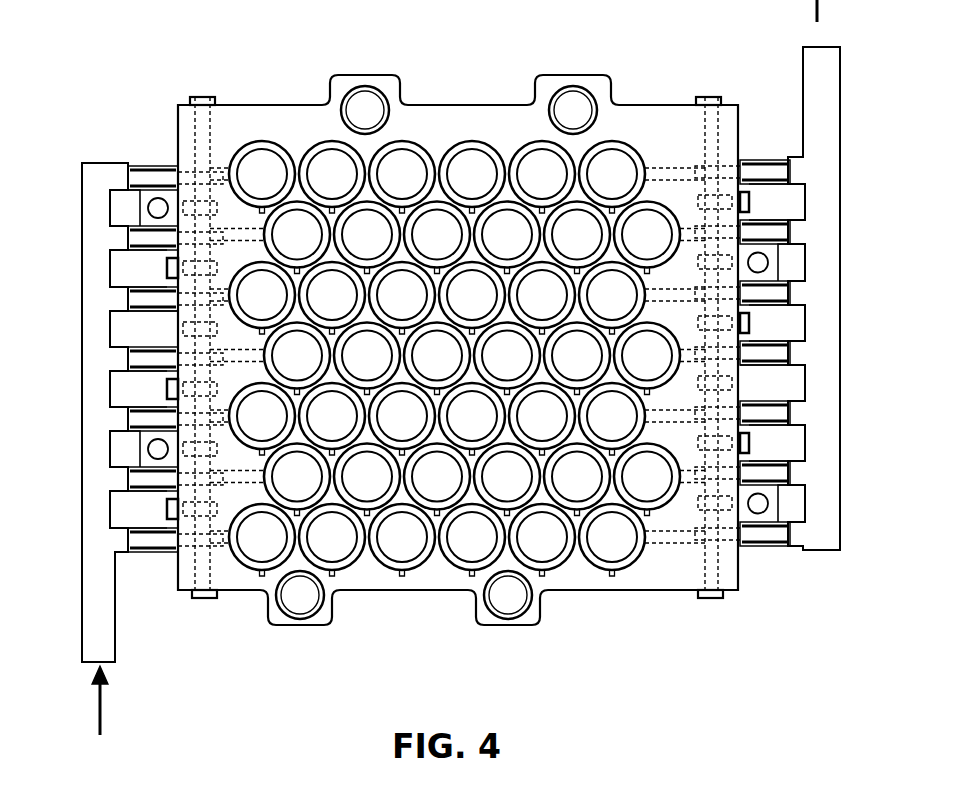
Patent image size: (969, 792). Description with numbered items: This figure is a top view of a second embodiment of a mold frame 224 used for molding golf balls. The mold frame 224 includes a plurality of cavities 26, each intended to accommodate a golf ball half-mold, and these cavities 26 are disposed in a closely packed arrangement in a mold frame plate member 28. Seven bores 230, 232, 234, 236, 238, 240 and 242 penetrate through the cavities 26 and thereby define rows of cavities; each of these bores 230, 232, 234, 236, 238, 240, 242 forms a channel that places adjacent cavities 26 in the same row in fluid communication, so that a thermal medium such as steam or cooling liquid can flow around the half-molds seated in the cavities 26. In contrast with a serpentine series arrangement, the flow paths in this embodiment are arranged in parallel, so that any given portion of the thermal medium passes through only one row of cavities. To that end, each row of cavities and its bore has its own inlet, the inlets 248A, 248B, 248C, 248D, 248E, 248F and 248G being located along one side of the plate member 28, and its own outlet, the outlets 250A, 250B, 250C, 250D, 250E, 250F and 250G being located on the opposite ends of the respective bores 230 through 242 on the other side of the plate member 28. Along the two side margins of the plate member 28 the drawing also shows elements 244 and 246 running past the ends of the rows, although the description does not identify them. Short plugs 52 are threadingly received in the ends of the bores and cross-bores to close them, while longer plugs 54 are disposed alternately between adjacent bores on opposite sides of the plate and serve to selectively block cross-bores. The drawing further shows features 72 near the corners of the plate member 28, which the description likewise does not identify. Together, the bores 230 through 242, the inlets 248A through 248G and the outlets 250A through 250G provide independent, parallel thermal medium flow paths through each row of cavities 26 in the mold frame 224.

The cavities 26 is at (332, 172).
The mold frame plate member 28 is at (456, 108).
The short plugs 52 is at (202, 97).
The longer plugs 54 is at (165, 268).
The alignment hole 72 is at (366, 108).
The mold frame 224 is at (220, 176).
The bore 230 is at (205, 163).
The bore 232 is at (213, 233).
The bore 234 is at (216, 291).
The bore 236 is at (216, 353).
The bore 238 is at (143, 420).
The bore 240 is at (143, 478).
The bore 242 is at (208, 548).
The return passage 244 is at (210, 562).
The return passage 246 is at (707, 556).
The inlet 248A is at (150, 176).
The inlet 248B is at (150, 238).
The inlet 248C is at (150, 300).
The inlet 248D is at (150, 360).
The inlet 248E is at (140, 460).
The inlet 248F is at (135, 520).
The inlet 248G is at (137, 540).
The outlet 250A is at (752, 172).
The outlet 250B is at (777, 234).
The outlet 250C is at (777, 294).
The outlet 250D is at (777, 354).
The outlet 250E is at (777, 414).
The outlet 250F is at (777, 474).
The outlet 250G is at (777, 534).